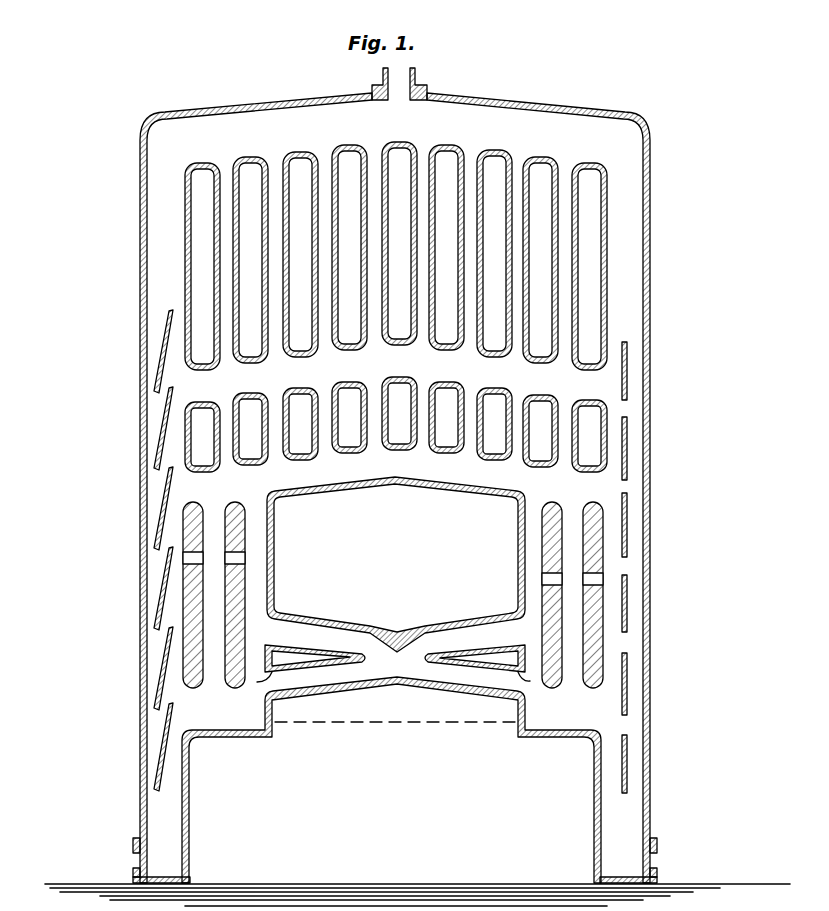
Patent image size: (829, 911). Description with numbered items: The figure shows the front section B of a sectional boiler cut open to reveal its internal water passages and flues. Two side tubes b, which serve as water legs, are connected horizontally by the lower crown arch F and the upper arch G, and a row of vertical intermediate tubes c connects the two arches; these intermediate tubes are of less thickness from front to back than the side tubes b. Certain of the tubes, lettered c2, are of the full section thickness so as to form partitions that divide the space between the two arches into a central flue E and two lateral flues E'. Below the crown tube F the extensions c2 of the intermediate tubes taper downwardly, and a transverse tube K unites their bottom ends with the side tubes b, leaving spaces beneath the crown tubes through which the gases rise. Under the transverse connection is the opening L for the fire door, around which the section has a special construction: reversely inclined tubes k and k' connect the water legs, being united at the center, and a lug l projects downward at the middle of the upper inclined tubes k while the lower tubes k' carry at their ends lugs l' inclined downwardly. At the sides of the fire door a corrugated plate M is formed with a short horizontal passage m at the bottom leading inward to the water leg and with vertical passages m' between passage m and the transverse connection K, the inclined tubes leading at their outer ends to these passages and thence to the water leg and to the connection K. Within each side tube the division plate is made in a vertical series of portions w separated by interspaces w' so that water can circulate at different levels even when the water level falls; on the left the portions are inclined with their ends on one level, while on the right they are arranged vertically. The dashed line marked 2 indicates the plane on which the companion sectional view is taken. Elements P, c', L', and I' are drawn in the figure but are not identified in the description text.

The front section B is at (650, 306).
The outlet pipe cap P is at (383, 77).
The side tubes b is at (152, 262).
The arch G is at (434, 246).
The central flue E is at (350, 249).
The lateral flues E' is at (226, 263).
The vertical intermediate tubes c is at (346, 291).
The extensions of the intermediate tubes c2 is at (273, 267).
The crown arch F is at (396, 417).
The tube opening c' is at (502, 470).
The transverse tube K is at (369, 471).
The opening for the fire door L is at (396, 564).
The corrugated plate M is at (393, 595).
The vertical passages m' is at (237, 578).
The short horizontal passage m is at (224, 711).
The upper inclined tubes k is at (396, 618).
The lug l is at (408, 647).
The lugs l' is at (397, 661).
The lower chamber plate L' is at (391, 780).
The lower inclined tubes k' is at (463, 700).
The lower partition I' is at (395, 735).
The division plate portions w is at (386, 551).
The interspaces w' is at (391, 548).
The section line 2 is at (140, 590).